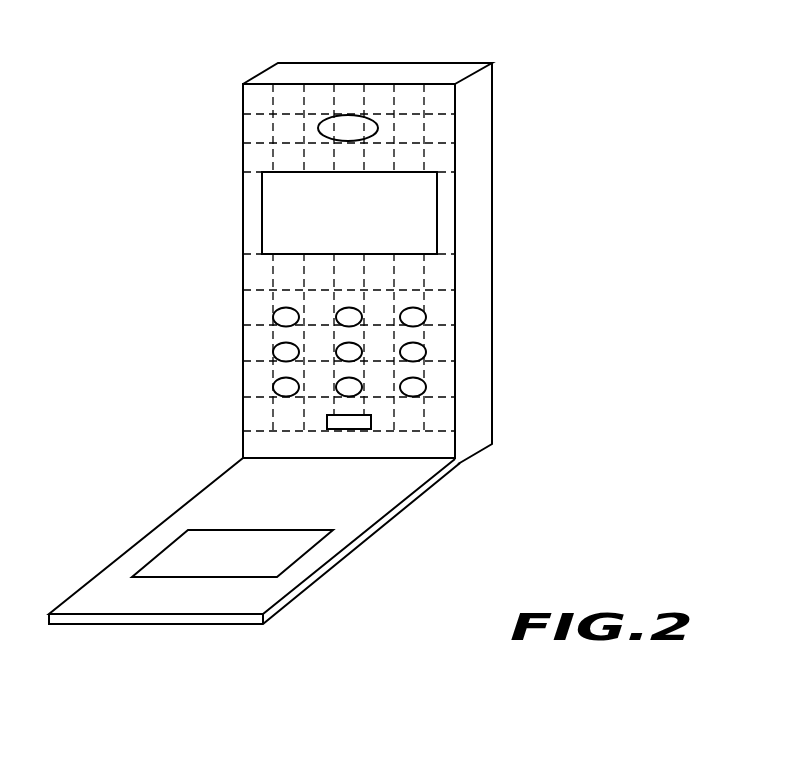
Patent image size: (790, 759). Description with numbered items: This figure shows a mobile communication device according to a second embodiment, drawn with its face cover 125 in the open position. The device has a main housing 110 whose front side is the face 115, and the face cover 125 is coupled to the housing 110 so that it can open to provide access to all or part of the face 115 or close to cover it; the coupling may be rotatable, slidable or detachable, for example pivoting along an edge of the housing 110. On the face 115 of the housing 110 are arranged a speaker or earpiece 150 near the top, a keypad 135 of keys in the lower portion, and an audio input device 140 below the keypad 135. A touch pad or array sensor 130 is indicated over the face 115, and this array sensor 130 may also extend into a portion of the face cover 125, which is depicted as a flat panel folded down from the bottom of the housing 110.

The main housing 110 is at (470, 114).
The face 115 is at (437, 270).
The face cover 125 is at (360, 541).
The array sensor 130 is at (423, 408).
The keypad 135 is at (424, 313).
The audio input device 140 is at (348, 432).
The speaker or earpiece 150 is at (347, 115).